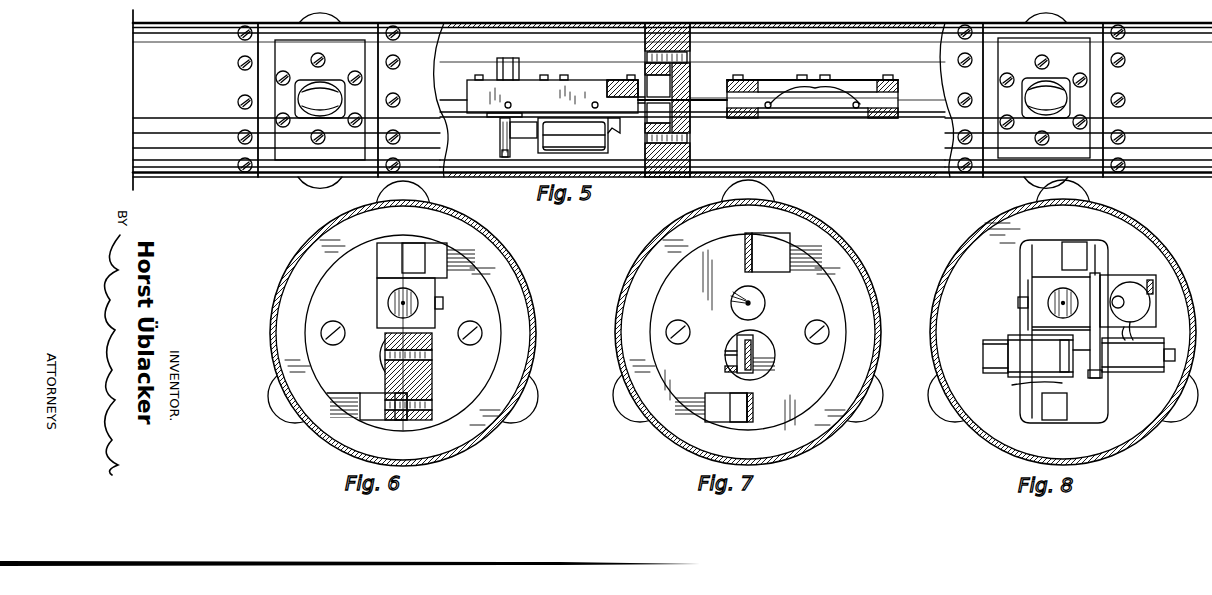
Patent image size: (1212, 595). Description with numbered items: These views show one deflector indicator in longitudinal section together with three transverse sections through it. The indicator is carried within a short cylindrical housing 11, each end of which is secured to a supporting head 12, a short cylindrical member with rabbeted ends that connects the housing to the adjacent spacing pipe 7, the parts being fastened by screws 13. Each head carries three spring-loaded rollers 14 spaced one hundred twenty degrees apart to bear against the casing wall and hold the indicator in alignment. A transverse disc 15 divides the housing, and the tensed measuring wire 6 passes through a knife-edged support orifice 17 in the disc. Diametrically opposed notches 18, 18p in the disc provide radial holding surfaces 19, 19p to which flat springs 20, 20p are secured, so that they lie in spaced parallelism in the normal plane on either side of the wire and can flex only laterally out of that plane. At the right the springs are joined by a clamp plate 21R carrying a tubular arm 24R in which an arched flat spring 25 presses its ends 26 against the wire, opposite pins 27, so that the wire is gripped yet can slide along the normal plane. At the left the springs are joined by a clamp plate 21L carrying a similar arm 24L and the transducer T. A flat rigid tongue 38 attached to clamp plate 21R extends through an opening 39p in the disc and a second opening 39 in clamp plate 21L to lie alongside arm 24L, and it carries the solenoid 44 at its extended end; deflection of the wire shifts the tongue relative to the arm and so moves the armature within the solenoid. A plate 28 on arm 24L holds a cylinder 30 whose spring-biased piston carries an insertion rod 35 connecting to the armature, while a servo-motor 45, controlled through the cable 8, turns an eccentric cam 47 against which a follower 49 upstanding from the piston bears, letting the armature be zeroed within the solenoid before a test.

In FIG. 5, the wire 6 is at (440, 97).
In FIG. 7, the wire 6 is at (738, 295).
In FIG. 8, the wire 6 is at (1022, 320).
In FIG. 5, the spacing pipe 7 is at (161, 40).
In FIG. 5, the cable 8 is at (384, 12).
In FIG. 5, the cylindrical housing 11 is at (442, 30).
In FIG. 6, the cylindrical housing 11 is at (333, 228).
In FIG. 7, the cylindrical housing 11 is at (660, 245).
In FIG. 8, the cylindrical housing 11 is at (993, 226).
In FIG. 5, the supporting head 12 is at (283, 30).
In FIG. 5, the screws 13 is at (238, 60).
In FIG. 5, the spring-loaded balls or rollers 14 is at (326, 92).
In FIG. 6, the spring-loaded balls or rollers 14 is at (422, 190).
In FIG. 7, the spring-loaded balls or rollers 14 is at (772, 195).
In FIG. 8, the spring-loaded balls or rollers 14 is at (1090, 192).
In FIG. 5, the disc 15 is at (692, 125).
In FIG. 6, the disc 15 is at (333, 290).
In FIG. 7, the disc 15 is at (676, 295).
In FIG. 8, the disc 15 is at (1140, 240).
In FIG. 5, the support orifice 17 is at (693, 90).
In FIG. 7, the support orifice 17 is at (752, 300).
In FIG. 6, the notch 18 is at (432, 250).
In FIG. 7, the notch 18 is at (782, 248).
In FIG. 6, the notch 18p is at (370, 413).
In FIG. 7, the notch 18p is at (720, 415).
In FIG. 7, the radial holding surface 19 is at (745, 255).
In FIG. 7, the radial holding surface 19p is at (755, 408).
In FIG. 6, the flat spring 20 is at (405, 245).
In FIG. 8, the flat spring 20 is at (1068, 245).
In FIG. 6, the flat spring 20p is at (405, 425).
In FIG. 7, the flat spring 20p is at (748, 425).
In FIG. 8, the flat spring 20p is at (1065, 420).
In FIG. 5, the clamp plate 21L is at (622, 80).
In FIG. 8, the clamp plate 21L is at (1098, 403).
In FIG. 6, the clamp plate 21R is at (437, 372).
In FIG. 5, the arm 24L is at (467, 85).
In FIG. 5, the arm 24R is at (898, 115).
In FIG. 6, the arm 24R is at (380, 312).
In FIG. 5, the arched flat spring 25 is at (840, 80).
In FIG. 6, the arched flat spring 25 is at (443, 300).
In FIG. 8, the arched flat spring 25 is at (1052, 305).
In FIG. 5, the spring ends 26 is at (776, 106).
In FIG. 5, the pins 27 is at (768, 110).
In FIG. 6, the pins 27 is at (390, 300).
In FIG. 8, the pins 27 is at (1060, 290).
In FIG. 8, the plate 28 is at (1112, 278).
In FIG. 5, the cylinder 30 is at (502, 152).
In FIG. 8, the cylinder 30 is at (1148, 365).
In FIG. 7, the insertion rod 35 is at (728, 352).
In FIG. 8, the insertion rod 35 is at (1100, 378).
In FIG. 7, the tongue 38 is at (753, 342).
In FIG. 8, the tongue 38 is at (1060, 355).
In FIG. 8, the opening 39 is at (1020, 386).
In FIG. 7, the opening 39p is at (728, 368).
In FIG. 5, the solenoid 44 is at (515, 62).
In FIG. 7, the solenoid 44 is at (760, 355).
In FIG. 8, the solenoid 44 is at (990, 345).
In FIG. 5, the servo-motor 45 is at (605, 137).
In FIG. 5, the eccentric cam 47 is at (504, 138).
In FIG. 8, the eccentric cam 47 is at (1152, 290).
In FIG. 8, the follower 49 is at (1135, 328).
In FIG. 5, the transducer T is at (468, 128).